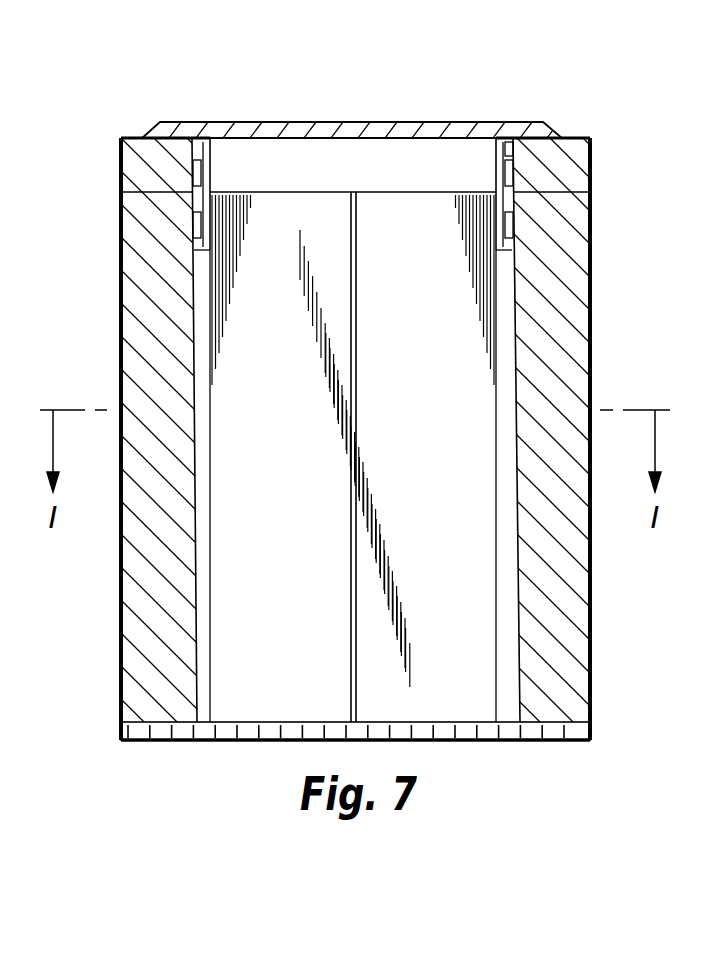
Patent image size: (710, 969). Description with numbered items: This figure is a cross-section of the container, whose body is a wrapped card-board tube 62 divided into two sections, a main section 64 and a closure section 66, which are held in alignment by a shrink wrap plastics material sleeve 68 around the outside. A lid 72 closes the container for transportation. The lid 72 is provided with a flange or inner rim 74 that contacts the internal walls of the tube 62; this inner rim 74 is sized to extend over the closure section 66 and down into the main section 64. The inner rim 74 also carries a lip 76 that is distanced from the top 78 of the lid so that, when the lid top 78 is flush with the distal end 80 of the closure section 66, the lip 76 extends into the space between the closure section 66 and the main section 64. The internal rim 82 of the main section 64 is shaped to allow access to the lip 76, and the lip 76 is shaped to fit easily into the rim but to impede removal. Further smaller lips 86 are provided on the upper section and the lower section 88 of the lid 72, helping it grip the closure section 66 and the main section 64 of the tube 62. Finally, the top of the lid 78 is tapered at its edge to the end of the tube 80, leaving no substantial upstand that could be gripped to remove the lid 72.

The wrapped card-board tube 62 is at (153, 582).
The main section 64 is at (545, 322).
The closure section 66 is at (552, 175).
The shrink wrap plastics material sleeve 68 is at (592, 622).
The lid 72 is at (345, 112).
The inner rim 74 is at (185, 240).
The lip 76 is at (517, 198).
The top of the lid 78 is at (395, 122).
The distal end of the closure section 80 is at (552, 160).
The internal rim of the main section 82 is at (198, 198).
The smaller lips 86 is at (196, 240).
The lower section of the lid 88 is at (196, 265).